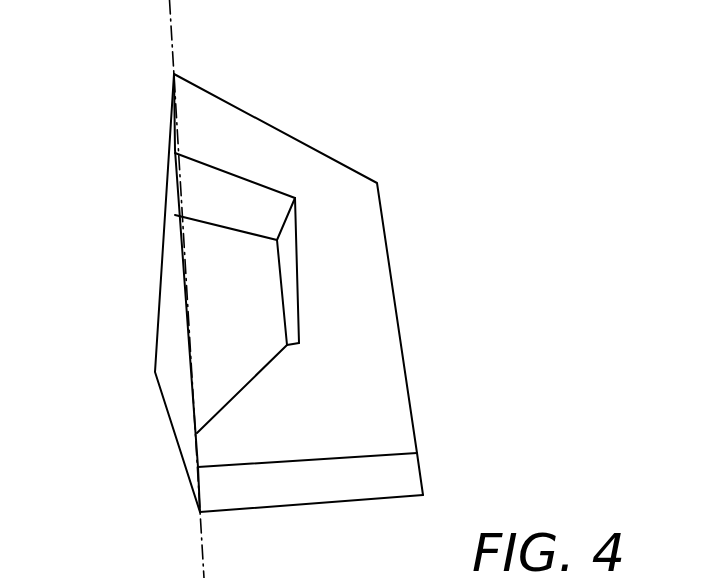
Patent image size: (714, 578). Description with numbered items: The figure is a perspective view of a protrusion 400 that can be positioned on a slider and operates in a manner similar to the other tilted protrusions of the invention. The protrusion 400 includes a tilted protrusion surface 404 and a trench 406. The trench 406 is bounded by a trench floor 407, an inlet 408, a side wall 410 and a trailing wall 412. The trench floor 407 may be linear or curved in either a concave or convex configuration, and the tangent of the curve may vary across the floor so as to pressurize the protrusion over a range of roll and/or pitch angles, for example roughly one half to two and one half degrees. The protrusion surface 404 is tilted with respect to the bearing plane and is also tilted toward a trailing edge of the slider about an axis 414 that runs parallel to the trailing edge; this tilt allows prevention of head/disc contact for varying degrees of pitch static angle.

The protrusion 400 is at (121, 83).
The tilted protrusion surface 404 is at (379, 244).
The trench 406 is at (197, 272).
The trench floor 407 is at (262, 324).
The inlet 408 is at (193, 394).
The side wall 410 is at (300, 320).
The trailing wall 412 is at (235, 172).
The axis 414 is at (207, 289).